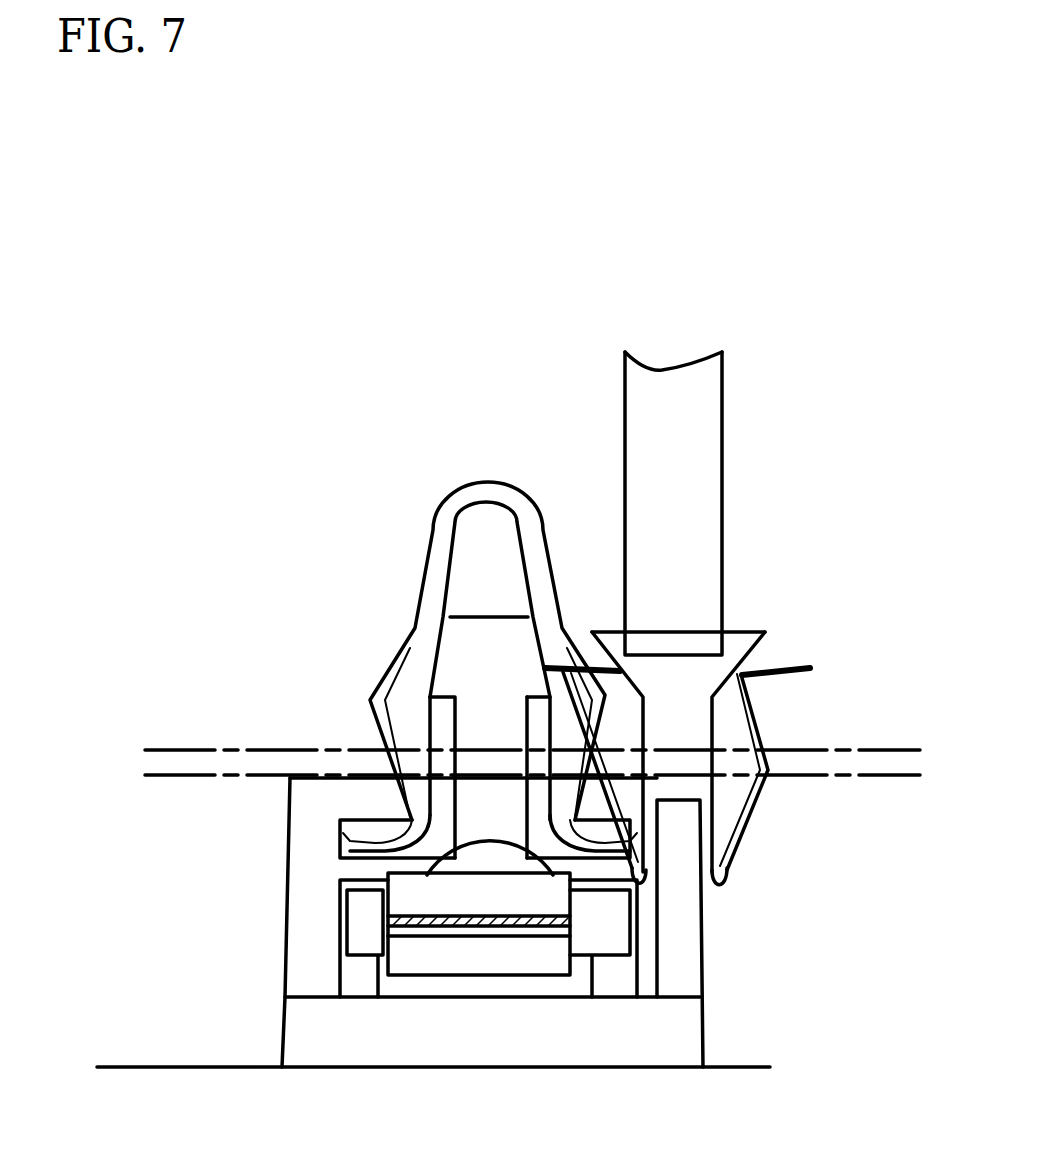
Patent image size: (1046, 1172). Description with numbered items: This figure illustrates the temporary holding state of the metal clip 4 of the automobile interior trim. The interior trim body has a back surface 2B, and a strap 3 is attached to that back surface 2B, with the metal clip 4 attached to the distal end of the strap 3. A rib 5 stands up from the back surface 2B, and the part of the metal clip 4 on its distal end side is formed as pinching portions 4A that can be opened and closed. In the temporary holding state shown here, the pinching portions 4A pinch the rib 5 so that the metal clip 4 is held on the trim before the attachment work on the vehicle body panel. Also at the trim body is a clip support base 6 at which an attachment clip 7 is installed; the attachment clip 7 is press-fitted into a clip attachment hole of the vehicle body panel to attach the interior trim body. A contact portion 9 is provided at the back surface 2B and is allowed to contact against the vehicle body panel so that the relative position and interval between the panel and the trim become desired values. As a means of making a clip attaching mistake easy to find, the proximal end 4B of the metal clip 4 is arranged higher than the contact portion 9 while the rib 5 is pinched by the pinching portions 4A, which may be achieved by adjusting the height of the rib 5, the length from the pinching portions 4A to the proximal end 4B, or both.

The back surface 2B is at (183, 1066).
The strap 3 is at (572, 421).
The metal clip 4 is at (742, 709).
The pinching portions 4A is at (742, 845).
The proximal end 4B is at (742, 632).
The rib 5 is at (702, 967).
The clip support base 6 is at (224, 902).
The attachment clip 7 is at (433, 523).
The contact portion 9 is at (342, 773).